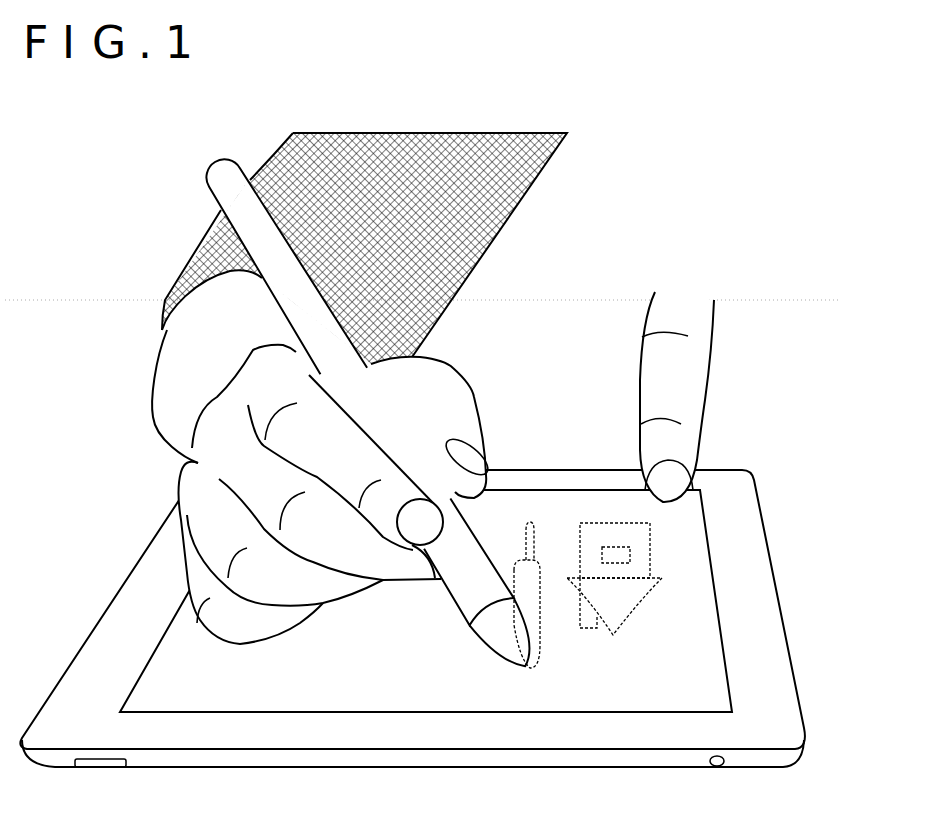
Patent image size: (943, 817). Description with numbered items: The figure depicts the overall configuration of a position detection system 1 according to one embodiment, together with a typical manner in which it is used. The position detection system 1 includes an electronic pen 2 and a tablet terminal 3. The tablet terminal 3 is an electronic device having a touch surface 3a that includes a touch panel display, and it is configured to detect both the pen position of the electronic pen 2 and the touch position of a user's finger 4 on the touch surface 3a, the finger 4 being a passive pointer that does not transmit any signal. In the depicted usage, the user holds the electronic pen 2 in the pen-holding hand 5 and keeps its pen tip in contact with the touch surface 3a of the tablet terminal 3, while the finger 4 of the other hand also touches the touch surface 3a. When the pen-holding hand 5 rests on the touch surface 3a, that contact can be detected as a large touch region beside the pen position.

The position detection system 1 is at (665, 131).
The electronic pen 2 is at (213, 173).
The tablet terminal 3 is at (423, 578).
The touch surface 3a is at (700, 632).
The finger 4 is at (688, 320).
The pen-holding hand 5 is at (193, 575).